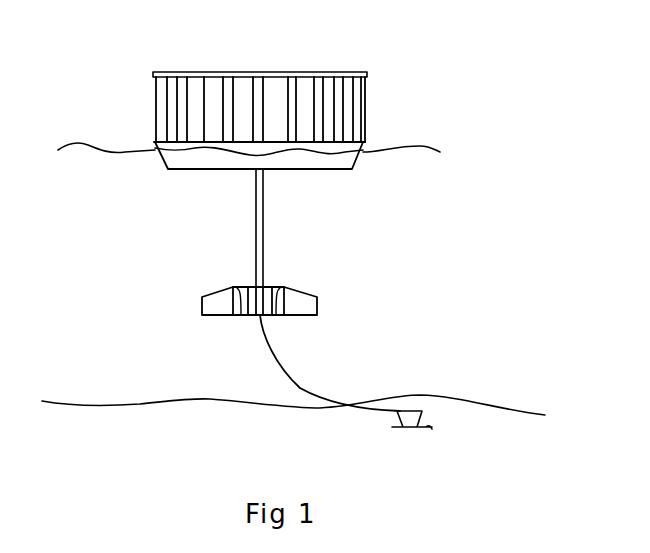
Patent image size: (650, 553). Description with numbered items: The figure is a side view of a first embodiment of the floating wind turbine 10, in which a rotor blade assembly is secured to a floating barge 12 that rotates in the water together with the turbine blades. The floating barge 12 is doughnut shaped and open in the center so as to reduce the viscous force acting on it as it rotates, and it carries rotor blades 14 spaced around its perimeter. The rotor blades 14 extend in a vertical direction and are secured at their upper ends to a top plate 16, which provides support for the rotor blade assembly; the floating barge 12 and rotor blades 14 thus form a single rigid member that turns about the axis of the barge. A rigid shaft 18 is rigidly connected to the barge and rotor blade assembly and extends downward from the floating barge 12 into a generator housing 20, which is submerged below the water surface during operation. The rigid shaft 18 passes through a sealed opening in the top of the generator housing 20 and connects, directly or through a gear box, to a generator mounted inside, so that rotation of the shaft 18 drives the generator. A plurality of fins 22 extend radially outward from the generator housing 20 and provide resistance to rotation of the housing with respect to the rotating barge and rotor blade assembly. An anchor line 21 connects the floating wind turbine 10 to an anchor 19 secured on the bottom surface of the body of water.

The floating wind turbine 10 is at (378, 95).
The floating barge 12 is at (342, 160).
The rotor blades 14 is at (205, 90).
The top plate 16 is at (272, 77).
The rigid shaft 18 is at (260, 213).
The anchor 19 is at (420, 418).
The generator housing 20 is at (284, 287).
The anchor line 21 is at (303, 303).
The fins 22 is at (212, 308).